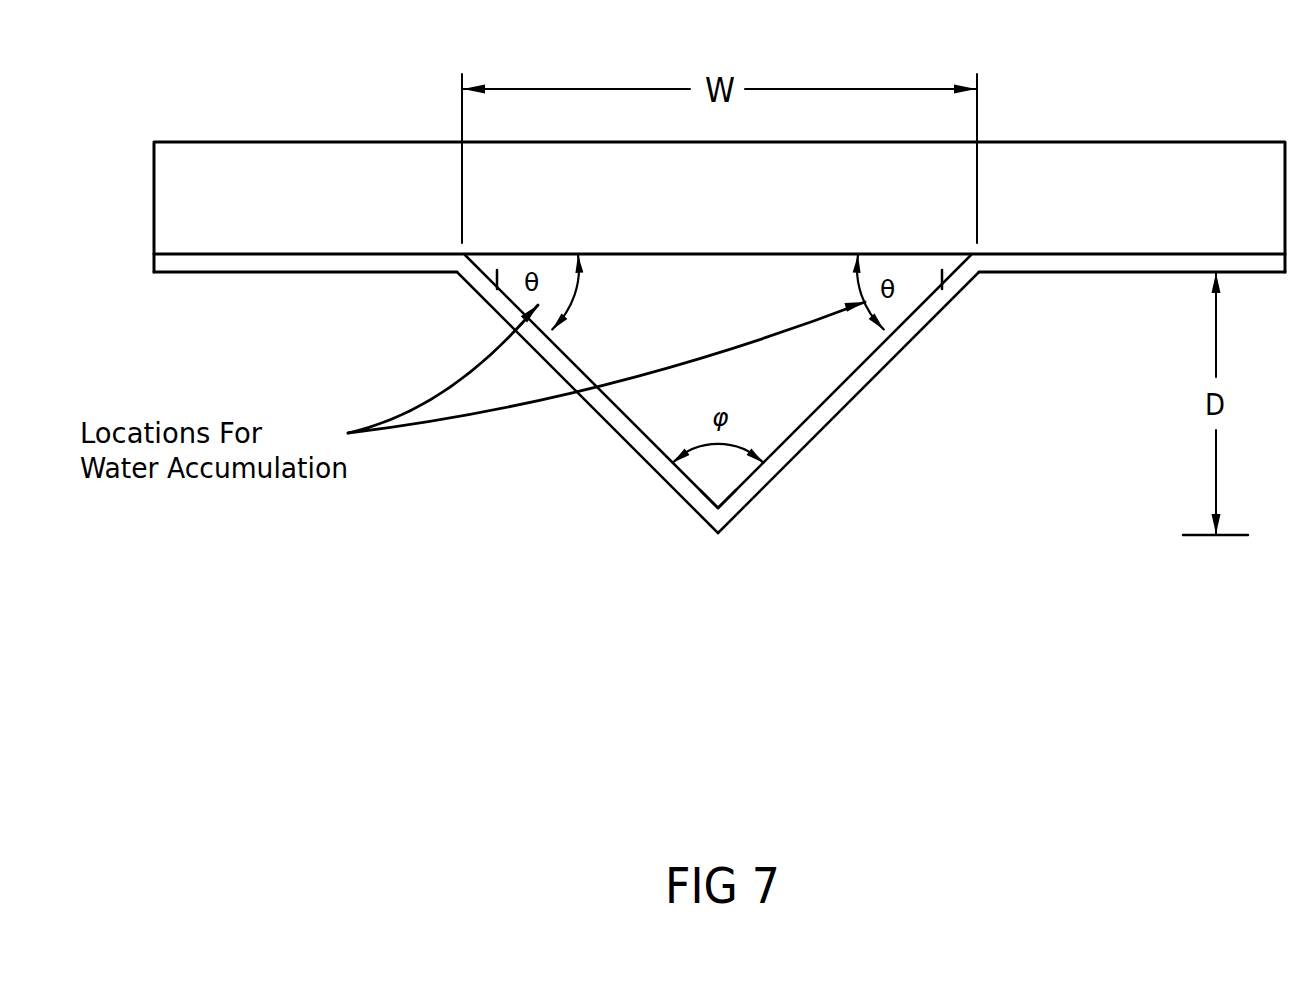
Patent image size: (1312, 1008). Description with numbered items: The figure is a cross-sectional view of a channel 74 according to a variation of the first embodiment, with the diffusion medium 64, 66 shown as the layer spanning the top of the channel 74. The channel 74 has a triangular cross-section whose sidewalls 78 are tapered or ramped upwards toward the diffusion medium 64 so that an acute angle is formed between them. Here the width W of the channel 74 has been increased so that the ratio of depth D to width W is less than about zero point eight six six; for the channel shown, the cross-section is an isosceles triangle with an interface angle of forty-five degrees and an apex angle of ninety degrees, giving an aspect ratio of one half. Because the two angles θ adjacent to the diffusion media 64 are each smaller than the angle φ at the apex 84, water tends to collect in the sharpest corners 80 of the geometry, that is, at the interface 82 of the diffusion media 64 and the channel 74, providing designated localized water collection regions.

The diffusion medium 64 is at (719, 156).
The panel layer 66 is at (1148, 152).
The channel 74 is at (711, 414).
The sidewall 78 is at (690, 494).
The sharpest corner 80 is at (719, 422).
The interface 82 is at (463, 257).
The apex 84 is at (718, 485).